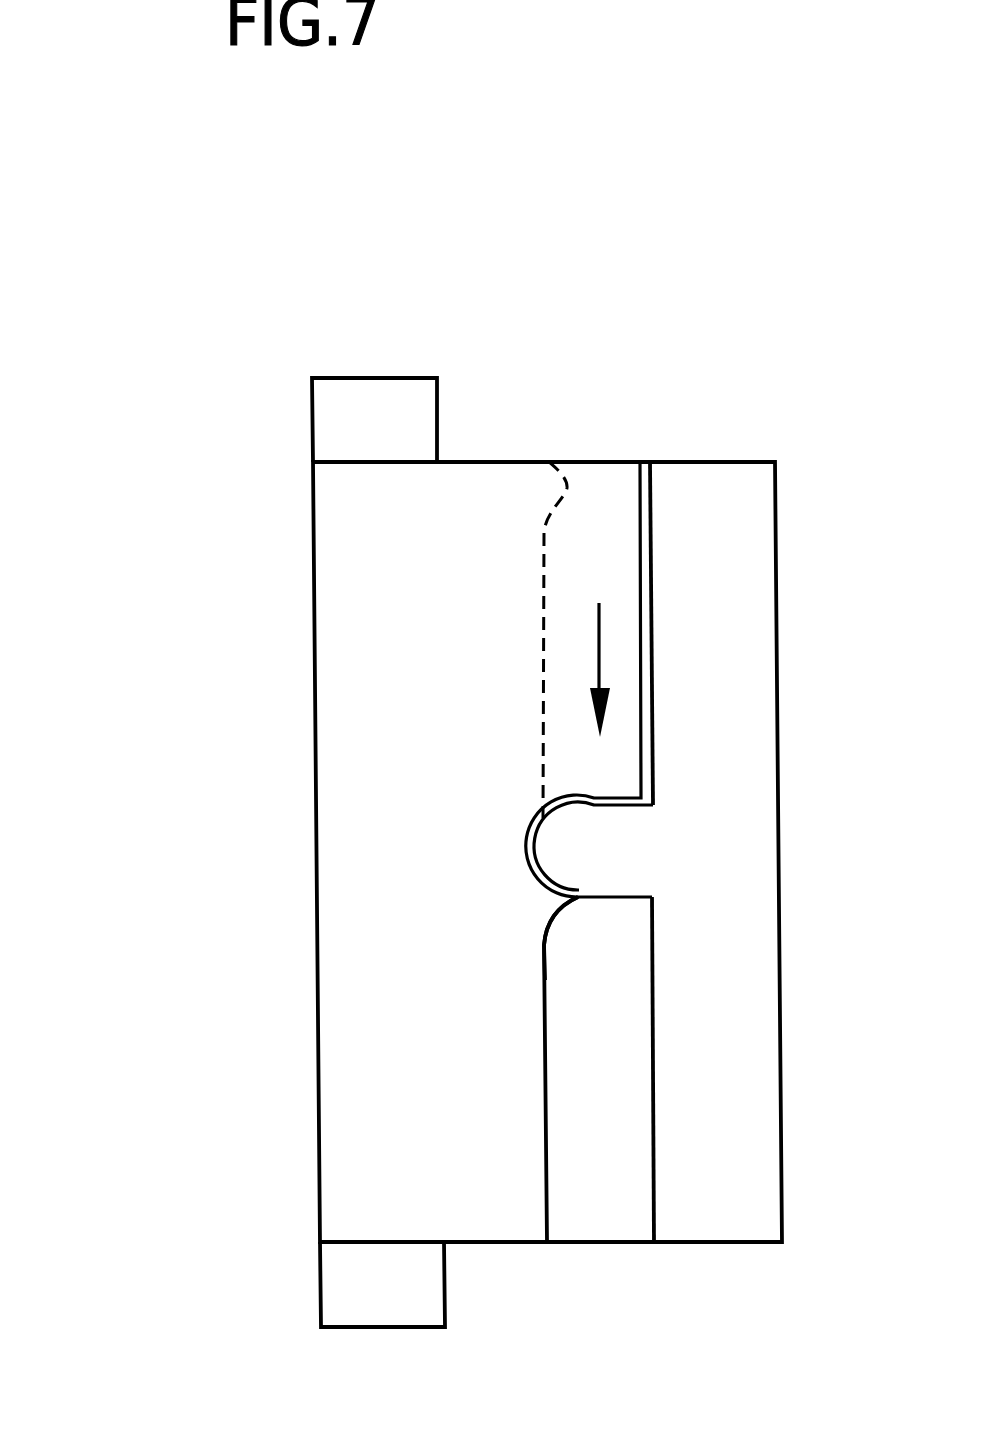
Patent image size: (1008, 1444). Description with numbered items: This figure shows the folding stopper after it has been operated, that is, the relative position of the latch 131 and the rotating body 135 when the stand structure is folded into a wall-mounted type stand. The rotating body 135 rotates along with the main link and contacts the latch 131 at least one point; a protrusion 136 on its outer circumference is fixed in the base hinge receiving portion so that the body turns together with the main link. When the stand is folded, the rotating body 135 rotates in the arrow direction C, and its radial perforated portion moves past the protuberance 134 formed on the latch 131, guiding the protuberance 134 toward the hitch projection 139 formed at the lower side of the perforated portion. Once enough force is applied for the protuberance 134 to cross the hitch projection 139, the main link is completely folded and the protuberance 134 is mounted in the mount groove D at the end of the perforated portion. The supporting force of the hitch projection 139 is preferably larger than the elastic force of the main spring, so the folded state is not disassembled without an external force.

The latch 131 is at (722, 515).
The protuberance 134 is at (600, 833).
The rotating body 135 is at (347, 585).
The protrusion 136 is at (372, 415).
The hitch projection 139 is at (557, 916).
The arrow direction C is at (597, 631).
The mount groove D is at (545, 827).